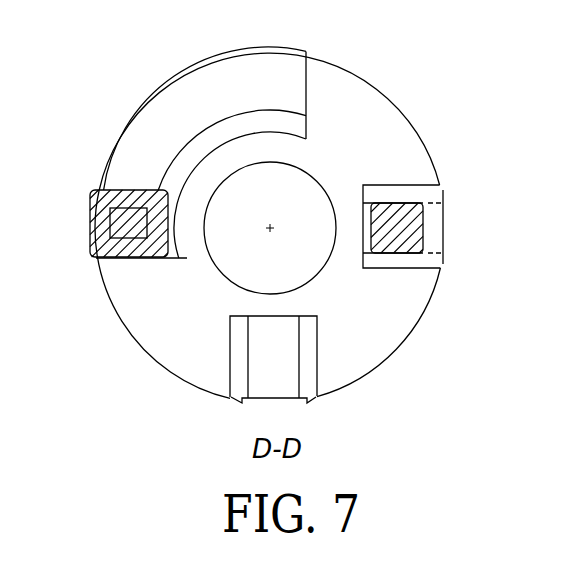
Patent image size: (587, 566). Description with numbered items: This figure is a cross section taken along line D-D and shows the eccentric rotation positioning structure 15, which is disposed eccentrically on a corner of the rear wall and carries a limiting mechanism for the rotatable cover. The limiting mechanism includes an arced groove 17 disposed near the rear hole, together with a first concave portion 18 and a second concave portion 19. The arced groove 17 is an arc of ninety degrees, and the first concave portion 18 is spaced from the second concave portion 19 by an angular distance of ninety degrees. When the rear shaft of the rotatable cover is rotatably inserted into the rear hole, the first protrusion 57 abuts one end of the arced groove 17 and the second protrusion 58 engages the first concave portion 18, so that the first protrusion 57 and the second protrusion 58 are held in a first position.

The eccentric rotation positioning structure 15 is at (395, 91).
The arced groove 17 is at (167, 108).
The first concave portion 18 is at (437, 227).
The second concave portion 19 is at (282, 353).
The first protrusion 57 is at (125, 195).
The second protrusion 58 is at (398, 203).